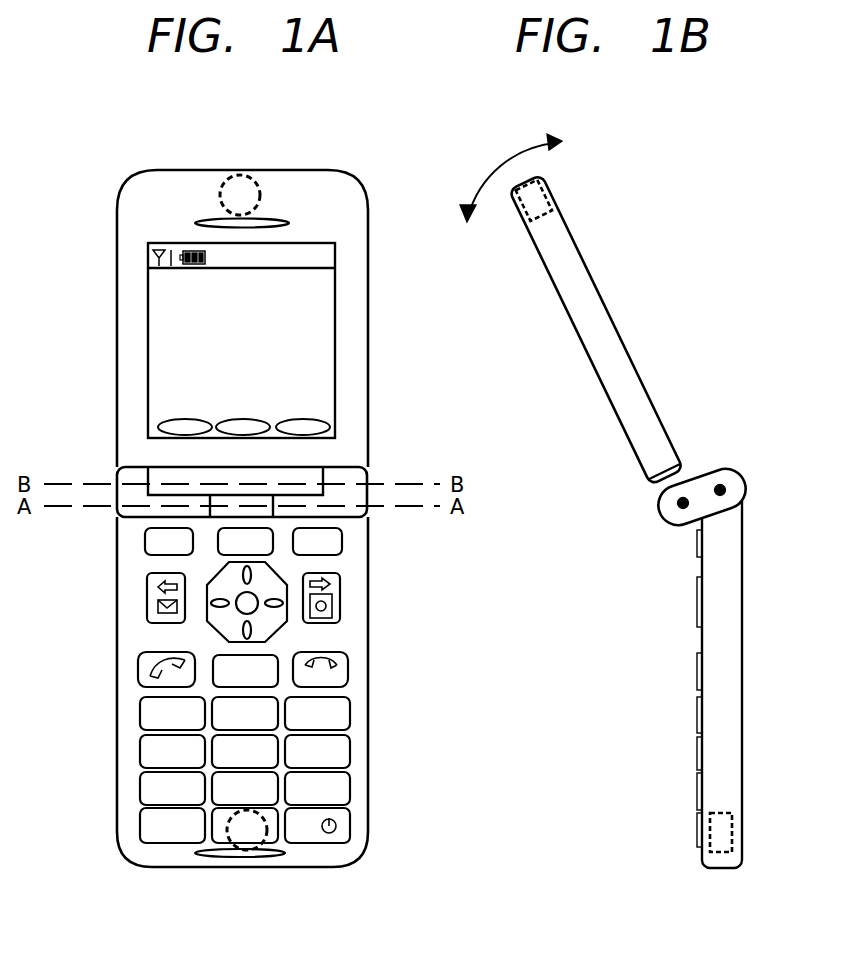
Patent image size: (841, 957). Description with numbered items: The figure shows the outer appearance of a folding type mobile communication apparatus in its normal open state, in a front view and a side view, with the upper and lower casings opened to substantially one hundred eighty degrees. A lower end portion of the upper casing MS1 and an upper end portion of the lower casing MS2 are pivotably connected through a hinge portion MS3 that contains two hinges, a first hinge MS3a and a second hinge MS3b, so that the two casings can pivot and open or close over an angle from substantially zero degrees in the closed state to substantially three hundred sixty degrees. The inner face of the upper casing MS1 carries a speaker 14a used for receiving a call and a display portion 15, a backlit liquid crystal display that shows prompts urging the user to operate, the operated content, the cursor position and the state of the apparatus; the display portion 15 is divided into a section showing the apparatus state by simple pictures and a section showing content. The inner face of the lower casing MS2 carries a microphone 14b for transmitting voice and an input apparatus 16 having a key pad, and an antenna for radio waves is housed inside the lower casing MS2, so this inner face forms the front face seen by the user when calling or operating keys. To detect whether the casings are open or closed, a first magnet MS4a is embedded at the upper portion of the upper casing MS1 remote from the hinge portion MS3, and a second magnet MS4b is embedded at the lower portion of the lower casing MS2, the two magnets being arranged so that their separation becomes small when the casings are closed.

In FIG. 1A, the upper casing MS1 is at (117, 199).
In FIG. 1B, the upper casing MS1 is at (583, 240).
In FIG. 1A, the lower casing MS2 is at (117, 689).
In FIG. 1B, the lower casing MS2 is at (706, 717).
In FIG. 1A, the hinge portion MS3 is at (350, 470).
In FIG. 1B, the hinge portion MS3 is at (660, 500).
In FIG. 1B, the first hinge MS3a is at (680, 502).
In FIG. 1B, the second hinge MS3b is at (709, 447).
In FIG. 1A, the first magnet MS4a is at (226, 181).
In FIG. 1B, the first magnet MS4a is at (541, 197).
In FIG. 1A, the second magnet MS4b is at (231, 838).
In FIG. 1B, the second magnet MS4b is at (710, 833).
In FIG. 1A, the speaker 14a is at (289, 223).
In FIG. 1B, the speaker 14a is at (525, 226).
In FIG. 1A, the microphone 14b is at (282, 853).
In FIG. 1B, the microphone 14b is at (704, 857).
In FIG. 1A, the display portion 15 is at (332, 342).
In FIG. 1B, the display portion 15 is at (573, 326).
In FIG. 1A, the input apparatus 16 is at (380, 532).
In FIG. 1B, the input apparatus 16 is at (693, 528).